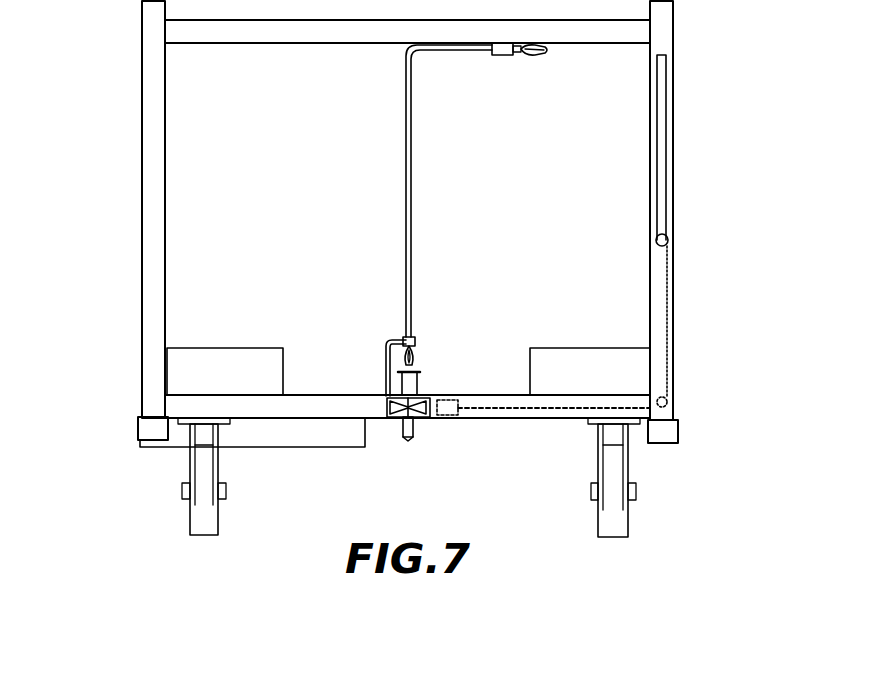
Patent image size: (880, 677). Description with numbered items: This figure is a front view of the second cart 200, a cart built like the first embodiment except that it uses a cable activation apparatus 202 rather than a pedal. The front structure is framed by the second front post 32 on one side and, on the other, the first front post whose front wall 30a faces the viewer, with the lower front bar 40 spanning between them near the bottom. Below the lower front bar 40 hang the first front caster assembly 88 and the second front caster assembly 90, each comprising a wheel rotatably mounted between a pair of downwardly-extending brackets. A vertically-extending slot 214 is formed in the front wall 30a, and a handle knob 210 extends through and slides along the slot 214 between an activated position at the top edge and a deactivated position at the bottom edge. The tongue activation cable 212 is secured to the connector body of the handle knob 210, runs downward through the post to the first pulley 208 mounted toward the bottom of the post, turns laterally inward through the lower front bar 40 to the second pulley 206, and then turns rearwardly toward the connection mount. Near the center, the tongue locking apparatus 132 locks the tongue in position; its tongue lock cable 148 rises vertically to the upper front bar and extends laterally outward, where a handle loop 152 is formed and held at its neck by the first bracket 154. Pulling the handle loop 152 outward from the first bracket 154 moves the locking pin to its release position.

The second front post 32 is at (148, 88).
The front wall 30a is at (668, 28).
The lower front bar 40 is at (310, 407).
The second front caster assembly 90 is at (186, 501).
The first front caster assembly 88 is at (634, 521).
The second cart 200 is at (626, 266).
The slot 214 is at (668, 163).
The handle knob 210 is at (668, 240).
The cable activation apparatus 202 is at (623, 365).
The tongue activation cable 212 is at (673, 342).
The first pulley 208 is at (673, 392).
The second pulley 206 is at (448, 417).
The tongue lock cable 148 is at (413, 243).
The first bracket 154 is at (503, 55).
The handle loop 152 is at (540, 55).
The tongue locking apparatus 132 is at (387, 327).